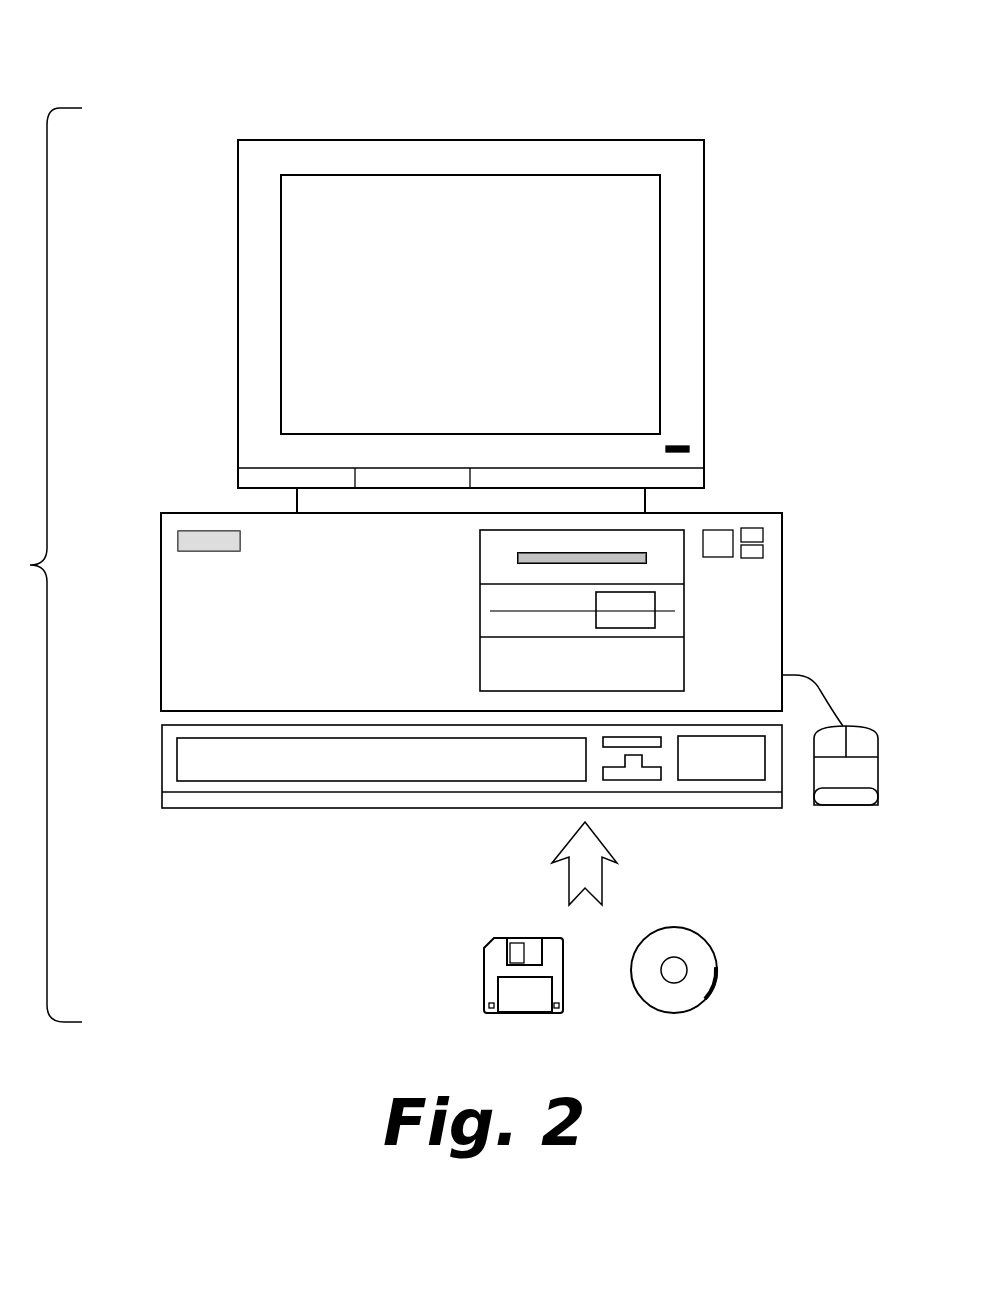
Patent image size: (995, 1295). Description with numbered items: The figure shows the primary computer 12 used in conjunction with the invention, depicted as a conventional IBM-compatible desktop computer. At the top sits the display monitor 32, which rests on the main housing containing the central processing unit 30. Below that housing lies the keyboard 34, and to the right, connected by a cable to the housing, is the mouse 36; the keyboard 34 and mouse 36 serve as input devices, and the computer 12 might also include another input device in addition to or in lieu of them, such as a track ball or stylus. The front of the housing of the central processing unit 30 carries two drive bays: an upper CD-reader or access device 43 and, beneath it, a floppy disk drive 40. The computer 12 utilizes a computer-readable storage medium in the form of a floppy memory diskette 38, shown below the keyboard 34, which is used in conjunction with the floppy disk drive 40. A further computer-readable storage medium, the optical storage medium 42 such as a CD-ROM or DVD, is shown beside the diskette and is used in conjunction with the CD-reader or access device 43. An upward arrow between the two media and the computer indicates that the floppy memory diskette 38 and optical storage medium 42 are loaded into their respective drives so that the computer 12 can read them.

The primary computer 12 is at (750, 66).
The central processing unit 30 is at (782, 568).
The display monitor 32 is at (683, 269).
The keyboard 34 is at (185, 758).
The mouse 36 is at (855, 735).
The floppy memory diskette 38 is at (484, 965).
The floppy disk drive 40 is at (495, 603).
The optical storage medium 42 is at (718, 959).
The CD-reader or access device 43 is at (503, 563).